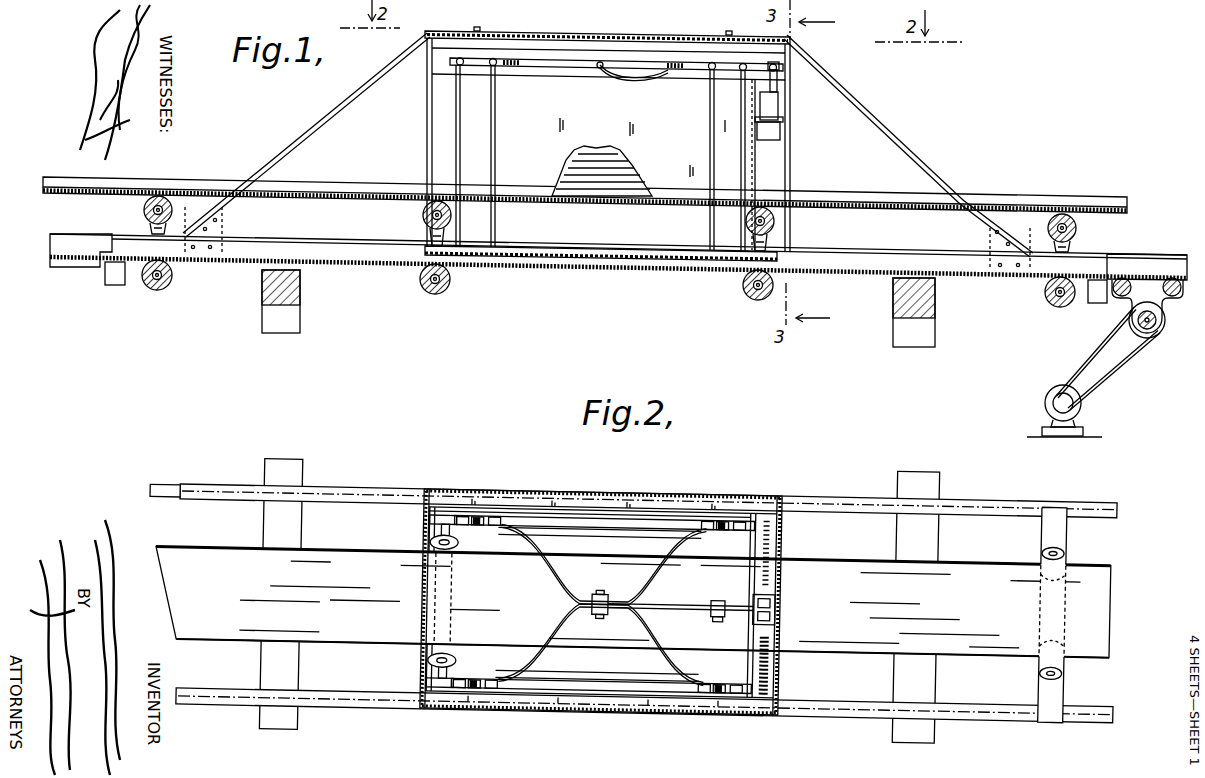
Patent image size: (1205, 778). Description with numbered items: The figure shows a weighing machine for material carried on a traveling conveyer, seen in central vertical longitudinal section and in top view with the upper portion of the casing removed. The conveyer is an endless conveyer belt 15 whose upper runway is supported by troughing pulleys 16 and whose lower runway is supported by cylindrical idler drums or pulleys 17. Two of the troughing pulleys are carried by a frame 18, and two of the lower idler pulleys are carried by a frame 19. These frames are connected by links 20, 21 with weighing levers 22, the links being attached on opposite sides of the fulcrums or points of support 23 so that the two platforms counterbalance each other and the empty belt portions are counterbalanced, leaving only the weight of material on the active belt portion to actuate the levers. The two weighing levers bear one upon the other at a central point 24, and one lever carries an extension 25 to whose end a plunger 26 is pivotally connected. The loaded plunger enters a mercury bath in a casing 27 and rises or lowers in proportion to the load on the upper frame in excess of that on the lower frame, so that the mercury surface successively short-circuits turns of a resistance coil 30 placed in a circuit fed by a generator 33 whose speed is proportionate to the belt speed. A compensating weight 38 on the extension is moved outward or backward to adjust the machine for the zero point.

In FIG. 1, the endless conveyer belt 15 is at (87, 190).
In FIG. 2, the endless conveyer belt 15 is at (632, 601).
In FIG. 1, the troughing pulleys 16 is at (144, 214).
In FIG. 2, the troughing pulleys 16 is at (440, 547).
In FIG. 1, the idler drums or pulleys 17 is at (174, 278).
In FIG. 1, the frame 18 is at (612, 250).
In FIG. 2, the frame 18 is at (617, 524).
In FIG. 1, the frame 19 is at (622, 278).
In FIG. 1, the link 20 is at (455, 143).
In FIG. 2, the link 20 is at (466, 514).
In FIG. 1, the link 21 is at (497, 147).
In FIG. 2, the link 21 is at (510, 514).
In FIG. 1, the weighing levers 22 is at (527, 60).
In FIG. 2, the weighing levers 22 is at (534, 562).
In FIG. 1, the fulcrums or points of support 23 is at (493, 66).
In FIG. 2, the fulcrums or points of support 23 is at (480, 514).
In FIG. 1, the central point 24 is at (603, 68).
In FIG. 2, the central point 24 is at (604, 610).
In FIG. 1, the extension 25 is at (810, 63).
In FIG. 2, the extension 25 is at (672, 603).
In FIG. 1, the plunger 26 is at (782, 112).
In FIG. 2, the plunger 26 is at (776, 599).
In FIG. 1, the casing 27 is at (784, 121).
In FIG. 2, the casing 27 is at (776, 614).
In FIG. 2, the resistance coil 30 is at (652, 498).
In FIG. 1, the generator 33 is at (1045, 403).
In FIG. 2, the compensating weight 38 is at (712, 612).